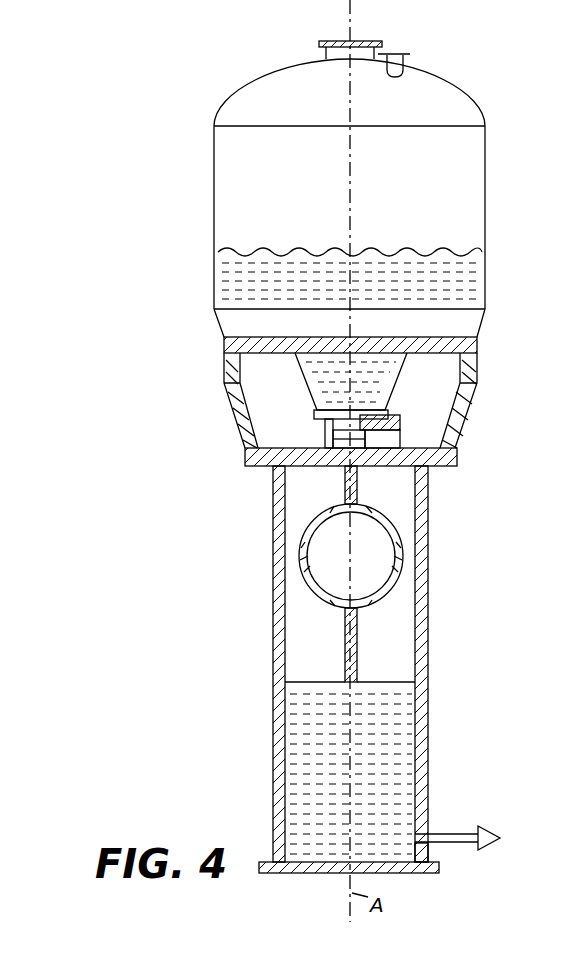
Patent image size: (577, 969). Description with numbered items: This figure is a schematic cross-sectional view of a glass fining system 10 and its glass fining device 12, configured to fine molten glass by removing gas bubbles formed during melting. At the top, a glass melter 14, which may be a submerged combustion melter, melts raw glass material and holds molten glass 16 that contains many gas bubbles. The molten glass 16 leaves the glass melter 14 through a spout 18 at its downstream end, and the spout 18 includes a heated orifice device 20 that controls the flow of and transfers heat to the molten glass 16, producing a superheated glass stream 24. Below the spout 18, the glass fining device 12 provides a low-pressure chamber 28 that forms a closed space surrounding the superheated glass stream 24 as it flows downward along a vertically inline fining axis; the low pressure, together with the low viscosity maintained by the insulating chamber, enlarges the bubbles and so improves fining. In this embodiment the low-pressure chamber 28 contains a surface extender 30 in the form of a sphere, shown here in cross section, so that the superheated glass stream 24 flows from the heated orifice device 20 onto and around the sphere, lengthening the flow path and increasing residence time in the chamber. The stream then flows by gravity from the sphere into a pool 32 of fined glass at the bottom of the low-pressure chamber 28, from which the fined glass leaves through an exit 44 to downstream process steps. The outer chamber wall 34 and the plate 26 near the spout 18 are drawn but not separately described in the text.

The glass fining system 10 is at (178, 78).
The glass fining device 12 is at (166, 487).
The glass melter 14 is at (486, 193).
The molten glass 16 is at (462, 272).
The spout 18 is at (286, 412).
The heated orifice device 20 is at (358, 447).
The superheated glass stream 24 is at (360, 488).
The lower flange plate 26 is at (336, 459).
The low-pressure chamber 28 is at (273, 600).
The surface extender 30 is at (380, 571).
The pool of fined glass 32 is at (326, 764).
The column wall 34 is at (273, 661).
The exit 44 is at (418, 832).